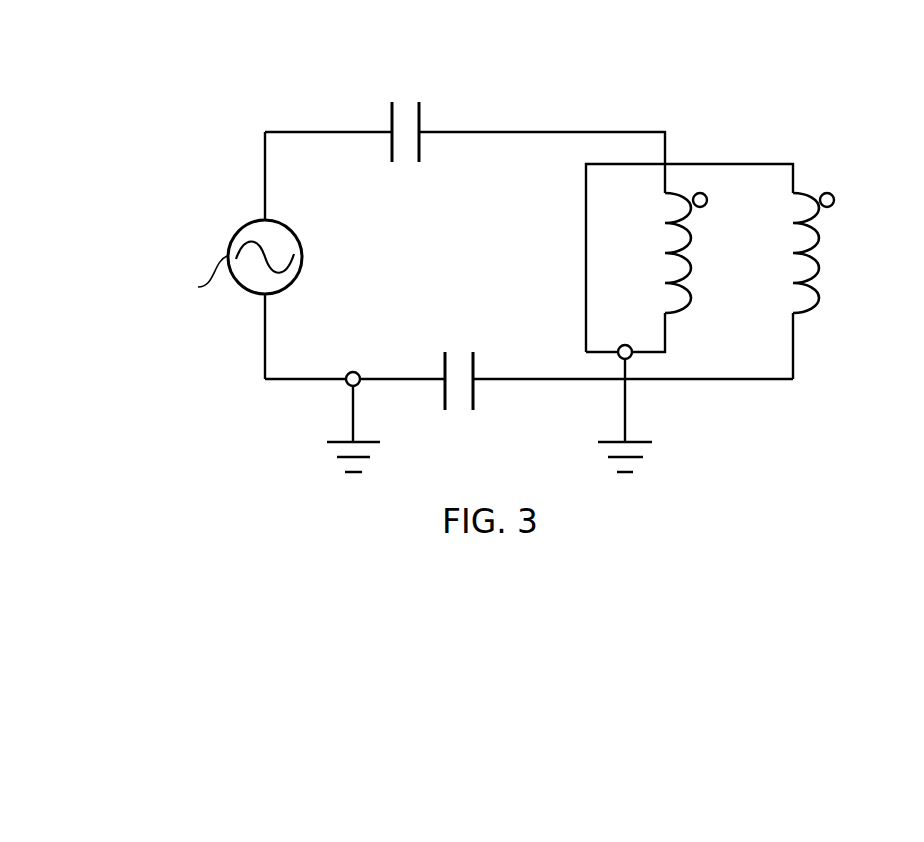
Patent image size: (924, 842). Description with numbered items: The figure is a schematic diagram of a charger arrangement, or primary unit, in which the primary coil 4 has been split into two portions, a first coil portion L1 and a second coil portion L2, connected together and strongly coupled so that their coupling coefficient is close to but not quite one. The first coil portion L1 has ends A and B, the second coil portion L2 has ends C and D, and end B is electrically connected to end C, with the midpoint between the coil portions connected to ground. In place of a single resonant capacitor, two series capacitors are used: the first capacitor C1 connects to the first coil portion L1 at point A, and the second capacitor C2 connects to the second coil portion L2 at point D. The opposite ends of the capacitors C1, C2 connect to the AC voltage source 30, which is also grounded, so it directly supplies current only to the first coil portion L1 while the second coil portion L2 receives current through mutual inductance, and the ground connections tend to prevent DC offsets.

The AC voltage source 30 is at (302, 257).
The primary coil 4 is at (772, 254).
The first capacitor C1 is at (424, 125).
The second capacitor C2 is at (477, 375).
The first coil portion L1 is at (671, 253).
The second coil portion L2 is at (825, 253).